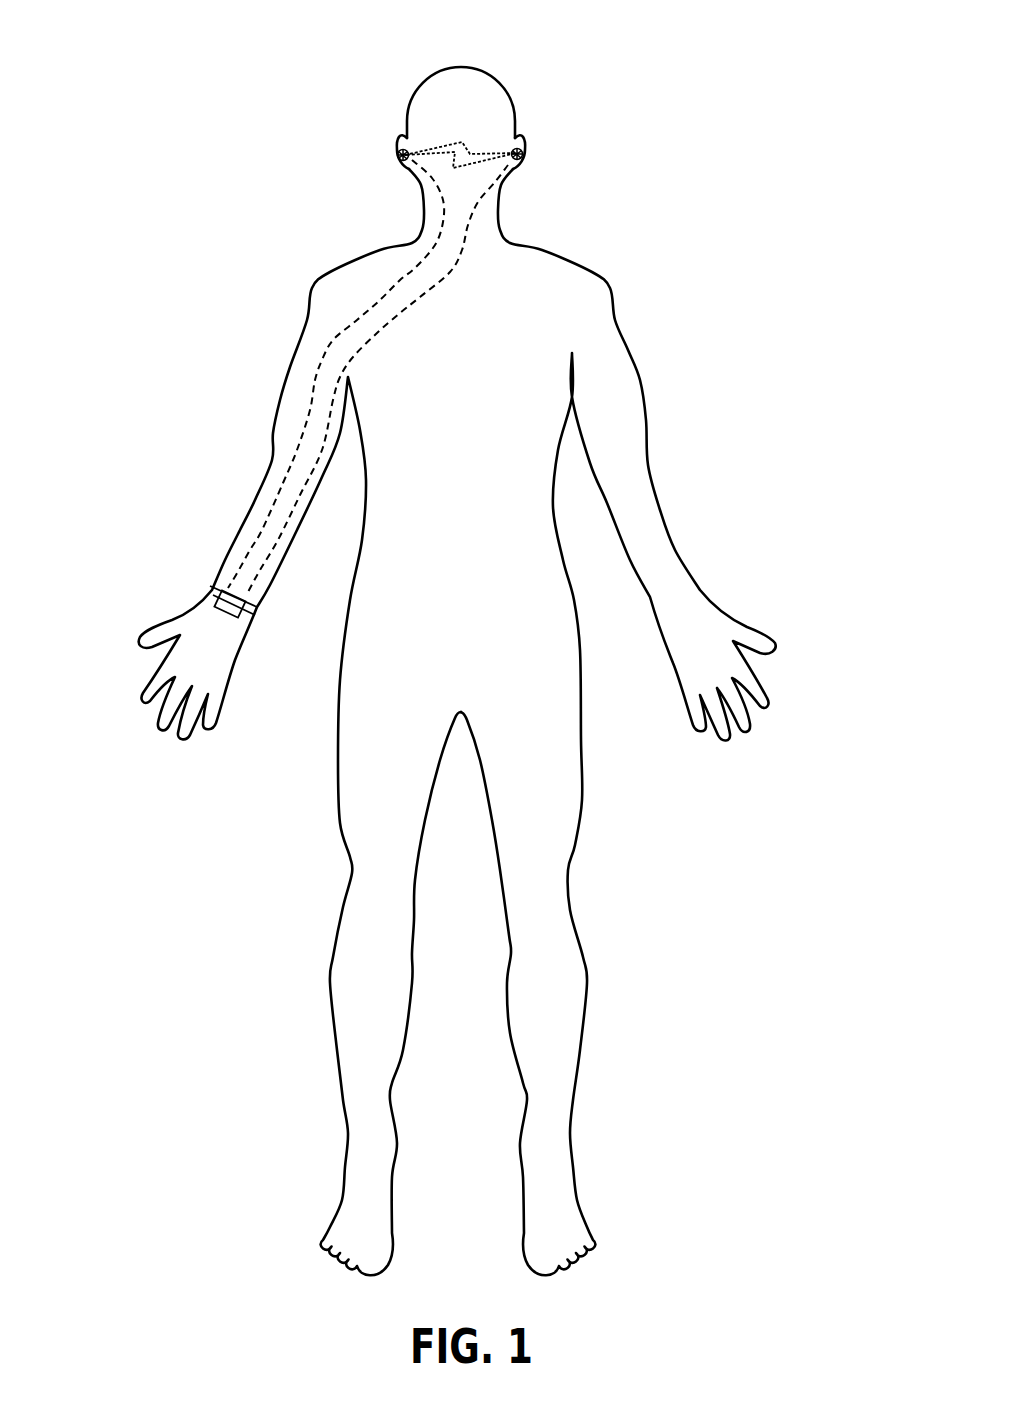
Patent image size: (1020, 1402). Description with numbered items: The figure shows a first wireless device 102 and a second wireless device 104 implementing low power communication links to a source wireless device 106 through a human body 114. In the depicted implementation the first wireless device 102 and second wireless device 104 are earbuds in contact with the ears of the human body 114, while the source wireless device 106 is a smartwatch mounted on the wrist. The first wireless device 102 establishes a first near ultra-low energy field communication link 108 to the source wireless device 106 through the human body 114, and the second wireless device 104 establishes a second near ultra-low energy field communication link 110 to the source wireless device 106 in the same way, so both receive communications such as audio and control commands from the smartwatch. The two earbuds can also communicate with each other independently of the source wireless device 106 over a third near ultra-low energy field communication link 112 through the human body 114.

The first wireless device 102 is at (400, 158).
The second wireless device 104 is at (521, 156).
The source wireless device 106 is at (212, 590).
The first NULEF communication link 108 is at (372, 305).
The second NULEF communication link 110 is at (459, 262).
The third NULEF communication link 112 is at (471, 153).
The human body 114 is at (581, 805).